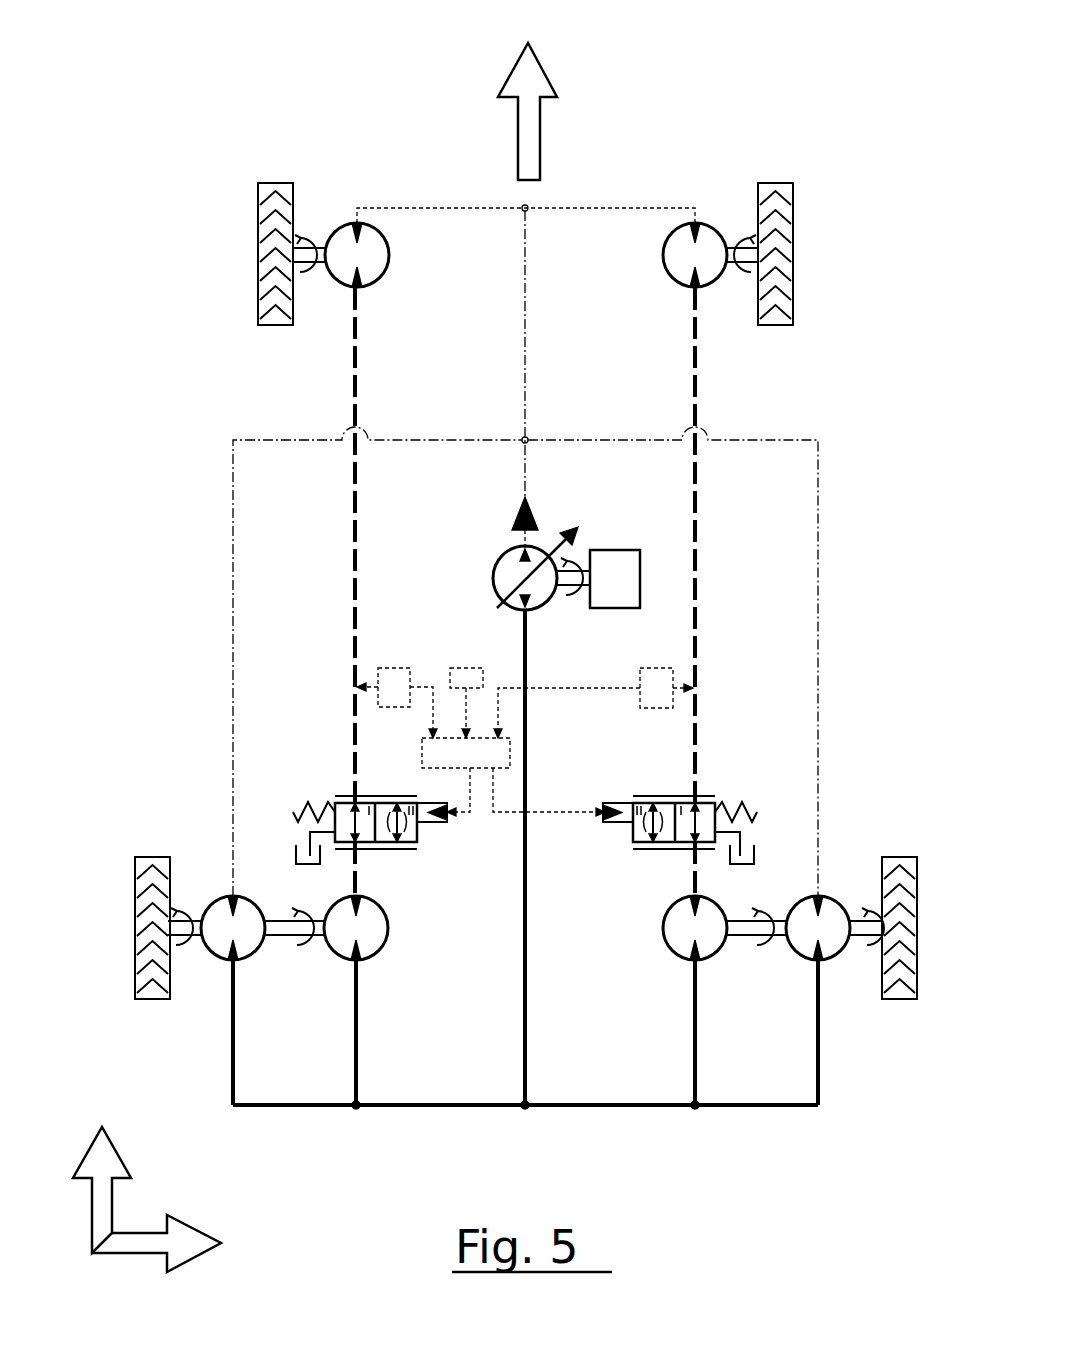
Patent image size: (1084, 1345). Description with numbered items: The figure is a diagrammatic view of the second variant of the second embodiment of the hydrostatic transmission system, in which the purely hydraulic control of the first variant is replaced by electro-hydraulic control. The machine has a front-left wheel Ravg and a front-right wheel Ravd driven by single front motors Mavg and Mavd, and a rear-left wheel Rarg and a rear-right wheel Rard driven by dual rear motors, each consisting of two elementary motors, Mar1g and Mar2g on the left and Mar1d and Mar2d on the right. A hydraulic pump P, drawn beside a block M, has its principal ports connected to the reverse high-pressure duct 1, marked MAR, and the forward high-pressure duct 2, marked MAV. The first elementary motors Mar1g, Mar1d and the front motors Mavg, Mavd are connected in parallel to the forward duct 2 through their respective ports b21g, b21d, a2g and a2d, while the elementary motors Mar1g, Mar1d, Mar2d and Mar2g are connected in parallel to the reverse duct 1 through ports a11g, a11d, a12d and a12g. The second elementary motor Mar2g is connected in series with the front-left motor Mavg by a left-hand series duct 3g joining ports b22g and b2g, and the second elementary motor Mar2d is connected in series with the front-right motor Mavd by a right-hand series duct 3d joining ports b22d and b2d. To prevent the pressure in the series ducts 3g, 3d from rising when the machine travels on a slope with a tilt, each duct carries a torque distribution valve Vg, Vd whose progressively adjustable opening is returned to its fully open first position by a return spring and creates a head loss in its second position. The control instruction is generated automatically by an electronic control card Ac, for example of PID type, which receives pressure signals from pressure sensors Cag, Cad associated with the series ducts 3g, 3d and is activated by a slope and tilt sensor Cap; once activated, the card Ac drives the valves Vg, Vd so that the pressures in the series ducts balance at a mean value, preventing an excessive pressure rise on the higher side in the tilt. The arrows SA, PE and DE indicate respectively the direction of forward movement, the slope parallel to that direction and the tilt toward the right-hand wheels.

The reverse high-pressure duct 1 is at (528, 650).
The forward high-pressure duct 2 is at (527, 486).
The left-hand series duct 3g is at (358, 580).
The right-hand series duct 3d is at (697, 580).
The hydraulic pump P is at (494, 575).
The motor driving the pump M is at (613, 550).
The direction of forward movement SA is at (527, 99).
The slope PE is at (102, 1176).
The tilt DE is at (174, 1243).
The forward travel MAV is at (499, 499).
The reverse travel MAR is at (500, 627).
The front-left wheel Ravg is at (275, 183).
The front-right wheel Ravd is at (776, 183).
The rear-left wheel Rarg is at (152, 857).
The rear-right wheel Rard is at (900, 857).
The front-left motor Mavg is at (372, 283).
The front-right motor Mavd is at (680, 283).
The first elementary motor of the rear-left dual motor Mar1g is at (250, 957).
The second elementary motor of the rear-left dual motor Mar2g is at (373, 957).
The first elementary motor of the rear-right dual motor Mar1d is at (835, 957).
The second elementary motor of the rear-right dual motor Mar2d is at (712, 957).
The left pressure sensor Cag is at (383, 668).
The slope and tilt sensor Cap is at (467, 668).
The right pressure sensor Cad is at (648, 668).
The electronic control card Ac is at (422, 753).
The left torque distribution valve Vg is at (408, 849).
The right torque distribution valve Vd is at (643, 849).
The port of front-left motor a2g is at (332, 213).
The port of front-left motor b2g is at (333, 297).
The port of front-right motor a2d is at (714, 213).
The port of front-right motor b2d is at (715, 297).
The port of first rear-left elementary motor b21g is at (216, 888).
The port of first rear-left elementary motor a11g is at (215, 980).
The port of second rear-left elementary motor b22g is at (339, 888).
The port of second rear-left elementary motor a12g is at (338, 980).
The port of second rear-right elementary motor b22d is at (678, 888).
The port of second rear-right elementary motor a12d is at (677, 980).
The port of first rear-right elementary motor b21d is at (801, 888).
The port of first rear-right elementary motor a11d is at (800, 980).